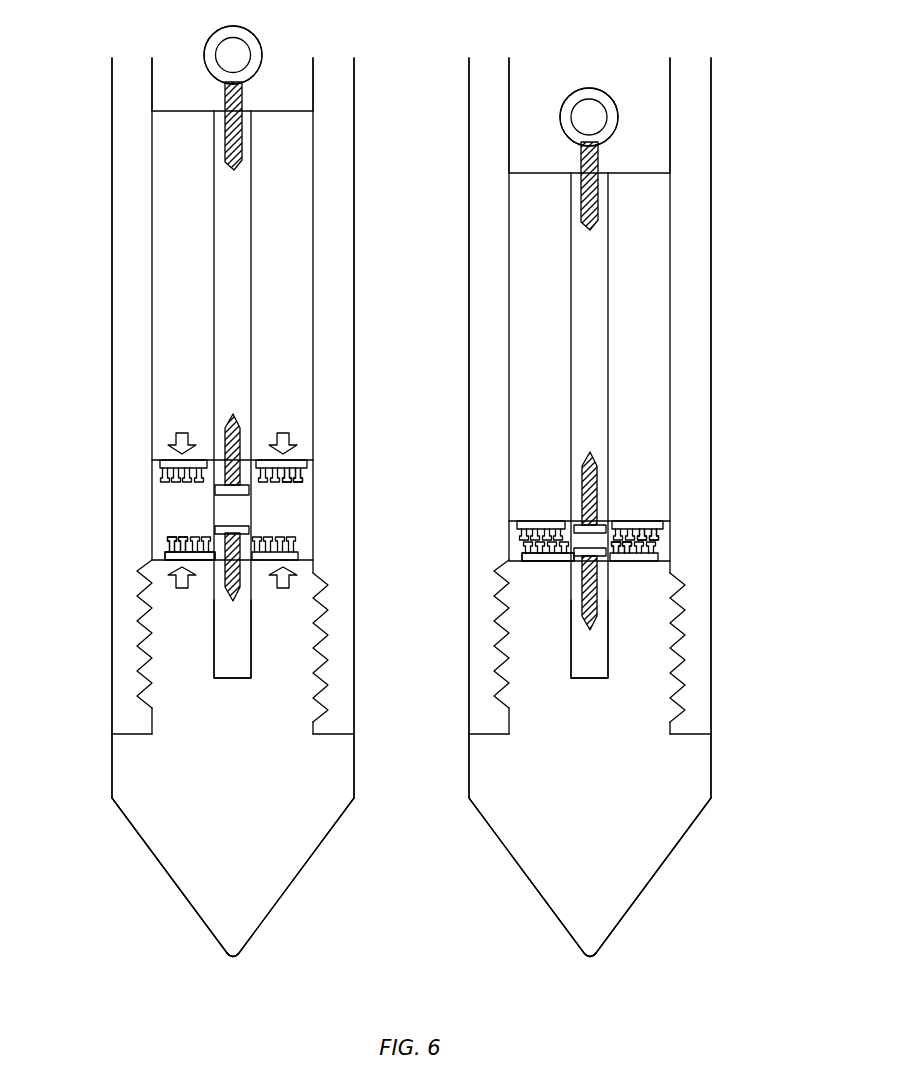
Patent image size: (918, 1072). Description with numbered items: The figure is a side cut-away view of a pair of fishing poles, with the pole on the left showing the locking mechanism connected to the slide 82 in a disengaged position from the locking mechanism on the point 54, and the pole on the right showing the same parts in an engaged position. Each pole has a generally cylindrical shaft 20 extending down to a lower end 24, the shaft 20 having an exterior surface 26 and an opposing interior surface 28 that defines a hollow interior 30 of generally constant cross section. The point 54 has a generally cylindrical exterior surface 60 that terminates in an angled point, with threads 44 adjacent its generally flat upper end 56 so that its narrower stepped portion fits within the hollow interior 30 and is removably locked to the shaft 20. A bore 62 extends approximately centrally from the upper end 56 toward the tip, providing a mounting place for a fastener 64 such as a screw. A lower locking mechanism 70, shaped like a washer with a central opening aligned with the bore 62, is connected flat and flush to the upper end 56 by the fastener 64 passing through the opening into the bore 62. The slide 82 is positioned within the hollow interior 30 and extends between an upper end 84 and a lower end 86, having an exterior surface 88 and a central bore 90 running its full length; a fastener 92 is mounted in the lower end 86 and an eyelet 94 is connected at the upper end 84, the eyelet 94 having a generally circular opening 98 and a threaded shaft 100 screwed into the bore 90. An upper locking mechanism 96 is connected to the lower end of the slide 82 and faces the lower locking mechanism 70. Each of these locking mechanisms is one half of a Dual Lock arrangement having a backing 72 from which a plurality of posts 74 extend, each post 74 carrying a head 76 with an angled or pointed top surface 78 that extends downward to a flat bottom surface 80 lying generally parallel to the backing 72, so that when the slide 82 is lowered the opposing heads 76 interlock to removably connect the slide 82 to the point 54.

The shaft 20 is at (106, 150).
The lower end 24 is at (325, 738).
The exterior surface 26 is at (112, 76).
The interior surface 28 is at (153, 76).
The hollow interior 30 is at (280, 56).
The threads 44 is at (320, 706).
The point 54 is at (360, 796).
The upper end 56 is at (302, 560).
The exterior surface 60 is at (354, 780).
The bore 62 is at (252, 636).
The fastener 64 is at (236, 526).
The lower locking mechanism 70 is at (160, 553).
The backing 72 is at (150, 560).
The posts 74 is at (163, 548).
The head 76 is at (168, 530).
The top surface 78 is at (187, 538).
The bottom surface 80 is at (170, 543).
The slide 82 is at (322, 170).
The upper end 84 is at (287, 110).
The lower end 86 is at (310, 462).
The exterior surface 88 is at (354, 230).
The bore 90 is at (252, 296).
The fastener 92 is at (238, 430).
The eyelet 94 is at (252, 35).
The upper locking mechanism 96 is at (158, 466).
The circular opening 98 is at (225, 52).
The threaded shaft 100 is at (242, 138).